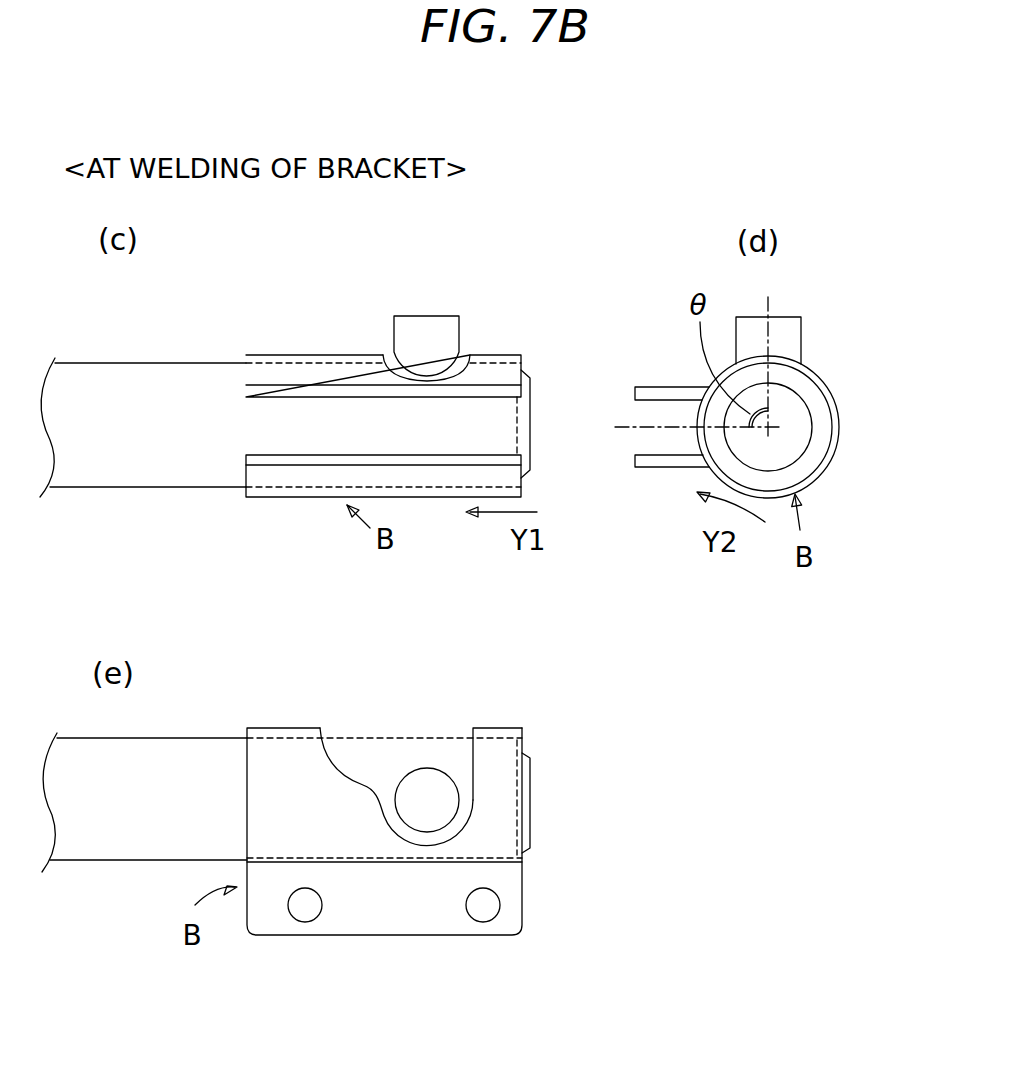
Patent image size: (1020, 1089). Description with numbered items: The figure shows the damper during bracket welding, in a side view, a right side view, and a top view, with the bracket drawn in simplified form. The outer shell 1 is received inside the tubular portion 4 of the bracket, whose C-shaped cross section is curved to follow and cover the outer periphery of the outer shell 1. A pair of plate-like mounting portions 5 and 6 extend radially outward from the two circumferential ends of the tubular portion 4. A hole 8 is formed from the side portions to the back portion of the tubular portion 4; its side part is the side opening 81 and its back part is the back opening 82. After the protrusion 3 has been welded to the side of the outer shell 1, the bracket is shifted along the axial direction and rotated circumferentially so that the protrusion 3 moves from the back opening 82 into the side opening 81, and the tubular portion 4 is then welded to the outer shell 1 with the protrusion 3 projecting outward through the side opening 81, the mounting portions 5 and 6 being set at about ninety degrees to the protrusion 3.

The outer shell 1 is at (155, 480).
The protrusion 3 is at (432, 322).
The tubular portion 4 is at (340, 355).
The mounting portion 5 is at (292, 455).
The mounting portion 6 is at (293, 392).
The hole 8 is at (456, 641).
The side opening 81 is at (465, 352).
The back opening 82 is at (457, 757).